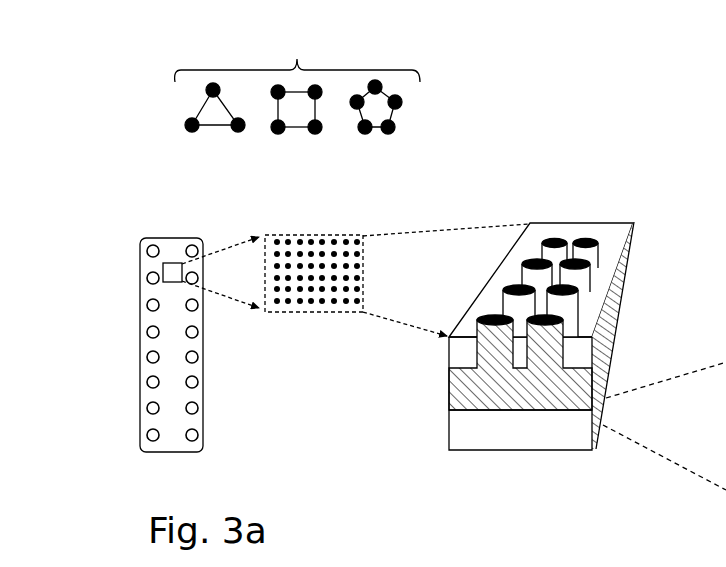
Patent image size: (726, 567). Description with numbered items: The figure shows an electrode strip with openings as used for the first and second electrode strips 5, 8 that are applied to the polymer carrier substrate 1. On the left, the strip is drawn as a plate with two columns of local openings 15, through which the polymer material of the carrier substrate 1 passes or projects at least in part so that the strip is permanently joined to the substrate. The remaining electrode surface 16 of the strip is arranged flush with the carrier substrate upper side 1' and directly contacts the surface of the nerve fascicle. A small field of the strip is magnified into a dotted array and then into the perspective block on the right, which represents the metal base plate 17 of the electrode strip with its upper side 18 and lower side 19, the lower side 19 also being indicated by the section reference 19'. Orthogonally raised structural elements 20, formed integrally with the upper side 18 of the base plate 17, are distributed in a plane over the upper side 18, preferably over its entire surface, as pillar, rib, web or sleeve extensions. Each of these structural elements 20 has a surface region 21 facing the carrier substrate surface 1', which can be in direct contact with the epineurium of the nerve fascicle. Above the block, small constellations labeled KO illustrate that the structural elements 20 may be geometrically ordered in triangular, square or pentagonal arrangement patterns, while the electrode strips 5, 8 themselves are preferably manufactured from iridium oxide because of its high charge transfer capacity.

The carrier substrate 1 is at (530, 366).
The carrier substrate upper side 1' is at (648, 307).
The first electrode strip 5 is at (165, 232).
The second electrode strip 8 is at (171, 345).
The local openings 15 is at (143, 335).
The electrode surface 16 is at (172, 418).
The metal base plate 17 is at (538, 413).
The upper side 18 is at (462, 364).
The lower side 19 is at (474, 393).
The carrier layer (section) 19' is at (664, 426).
The raised structural elements 20 is at (571, 350).
The surface region 21 is at (352, 229).